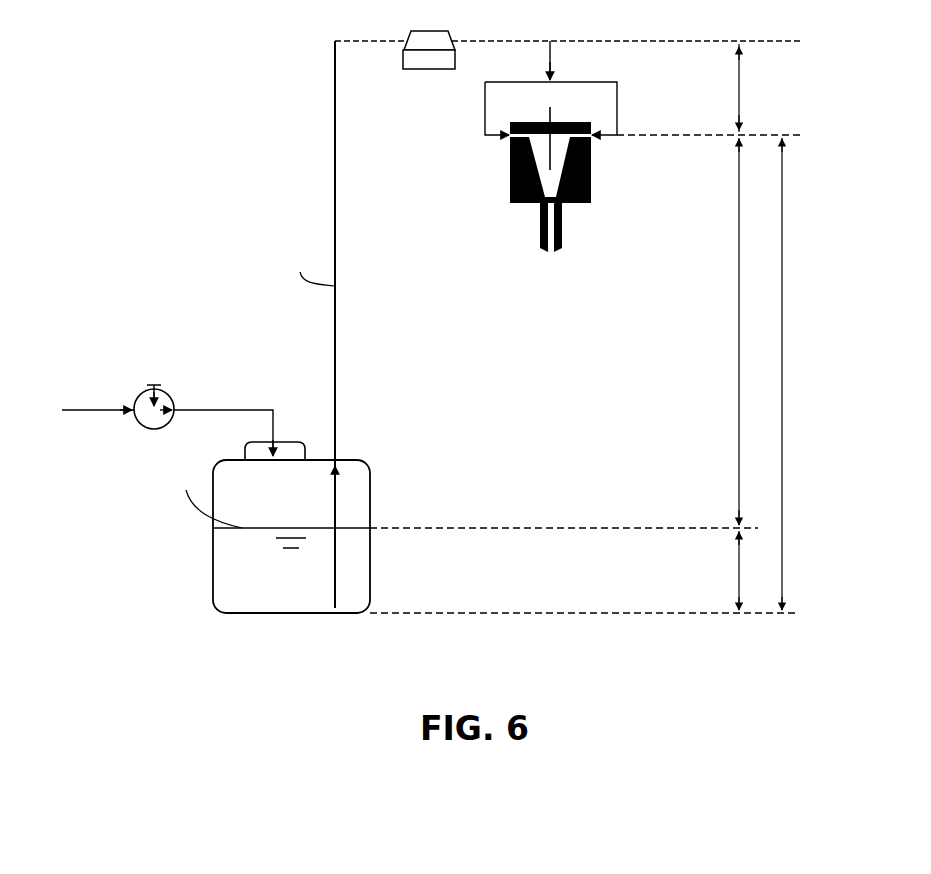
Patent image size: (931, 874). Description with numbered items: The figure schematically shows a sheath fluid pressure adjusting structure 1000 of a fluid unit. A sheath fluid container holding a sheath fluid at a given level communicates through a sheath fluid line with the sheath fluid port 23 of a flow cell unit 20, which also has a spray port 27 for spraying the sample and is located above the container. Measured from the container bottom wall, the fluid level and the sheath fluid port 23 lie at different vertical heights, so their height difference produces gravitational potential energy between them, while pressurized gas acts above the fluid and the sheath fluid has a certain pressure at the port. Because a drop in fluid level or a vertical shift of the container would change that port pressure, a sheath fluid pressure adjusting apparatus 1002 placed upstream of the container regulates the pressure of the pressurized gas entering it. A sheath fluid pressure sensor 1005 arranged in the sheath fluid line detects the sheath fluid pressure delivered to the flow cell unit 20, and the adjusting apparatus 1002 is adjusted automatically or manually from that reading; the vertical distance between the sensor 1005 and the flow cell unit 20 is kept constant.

The sheath fluid pressure adjusting structure 1000 is at (177, 145).
The sheath fluid pressure adjusting apparatus 1002 is at (153, 395).
The sheath fluid pressure sensor 1005 is at (429, 36).
The flow cell unit 20 is at (521, 234).
The sheath fluid port 23 is at (507, 139).
The spray port 27 is at (548, 254).